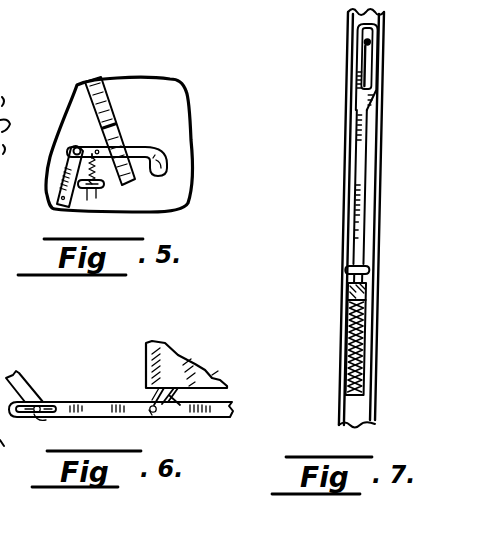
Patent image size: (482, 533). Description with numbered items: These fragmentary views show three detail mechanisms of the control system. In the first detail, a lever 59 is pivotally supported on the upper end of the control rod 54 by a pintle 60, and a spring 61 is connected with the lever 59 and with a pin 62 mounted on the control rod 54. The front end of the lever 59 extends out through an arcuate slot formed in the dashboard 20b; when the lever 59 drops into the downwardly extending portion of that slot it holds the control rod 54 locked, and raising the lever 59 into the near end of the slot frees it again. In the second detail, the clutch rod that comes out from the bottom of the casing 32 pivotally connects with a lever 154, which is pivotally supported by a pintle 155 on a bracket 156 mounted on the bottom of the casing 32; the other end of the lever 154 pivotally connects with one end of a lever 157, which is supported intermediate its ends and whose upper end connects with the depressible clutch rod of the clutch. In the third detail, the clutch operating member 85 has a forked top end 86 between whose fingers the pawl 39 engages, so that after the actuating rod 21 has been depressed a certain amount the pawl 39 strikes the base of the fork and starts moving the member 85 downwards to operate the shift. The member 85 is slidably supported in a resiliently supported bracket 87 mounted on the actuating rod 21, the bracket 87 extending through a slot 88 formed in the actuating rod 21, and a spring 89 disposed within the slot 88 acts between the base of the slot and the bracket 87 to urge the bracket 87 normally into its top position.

In FIG. 5, the dashboard 20b is at (110, 93).
In FIG. 5, the lever 59 is at (152, 147).
In FIG. 5, the pintle 60 is at (76, 148).
In FIG. 5, the spring 61 is at (100, 178).
In FIG. 5, the pin 62 is at (88, 188).
In FIG. 5, the control rod 54 is at (60, 206).
In FIG. 6, the casing 32 is at (151, 350).
In FIG. 6, the lever 154 is at (114, 391).
In FIG. 6, the pintle 155 is at (154, 421).
In FIG. 6, the bracket 156 is at (173, 403).
In FIG. 6, the lever 157 is at (30, 390).
In FIG. 7, the pawl 39 is at (363, 42).
In FIG. 7, the forked top end 86 is at (357, 70).
In FIG. 7, the member 85 is at (358, 115).
In FIG. 7, the actuating rod 21 is at (348, 165).
In FIG. 7, the bracket 87 is at (350, 268).
In FIG. 7, the slot 88 is at (353, 289).
In FIG. 7, the spring 89 is at (353, 342).